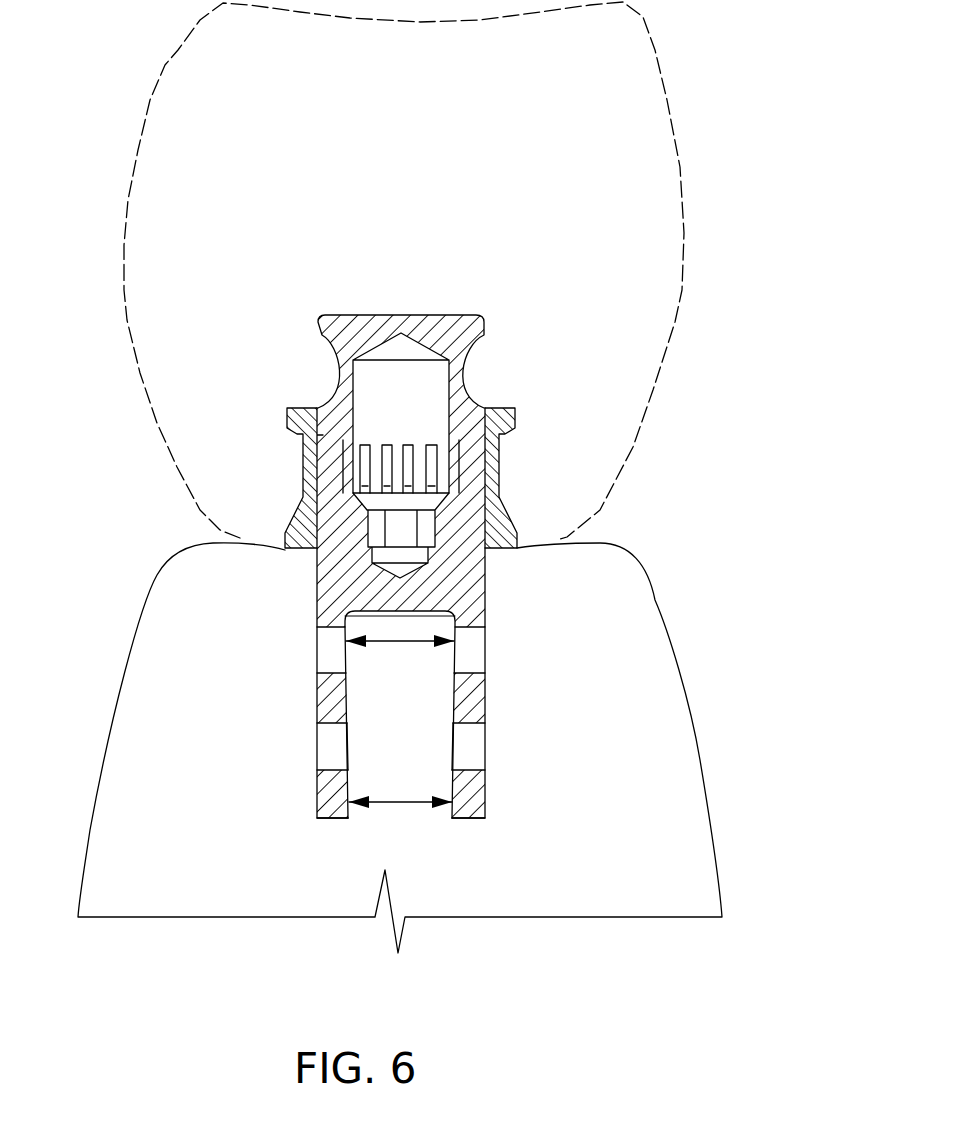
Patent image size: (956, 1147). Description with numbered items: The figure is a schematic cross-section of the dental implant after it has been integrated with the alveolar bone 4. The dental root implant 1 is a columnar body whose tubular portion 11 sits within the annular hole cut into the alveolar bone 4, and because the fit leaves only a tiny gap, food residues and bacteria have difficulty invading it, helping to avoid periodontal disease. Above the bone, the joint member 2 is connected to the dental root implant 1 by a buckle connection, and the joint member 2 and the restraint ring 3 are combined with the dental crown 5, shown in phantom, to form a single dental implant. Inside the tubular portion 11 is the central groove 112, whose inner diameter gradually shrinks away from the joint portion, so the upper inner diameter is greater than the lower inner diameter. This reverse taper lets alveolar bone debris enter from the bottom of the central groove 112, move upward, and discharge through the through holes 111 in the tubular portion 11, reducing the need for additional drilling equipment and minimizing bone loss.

The dental root implant 1 is at (489, 826).
The tubular portion 11 is at (485, 683).
The through holes 111 is at (485, 748).
The central groove 112 is at (447, 815).
The joint member 2 is at (486, 311).
The restraint ring 3 is at (522, 411).
The alveolar bone 4 is at (677, 705).
The dental crown 5 is at (675, 322).